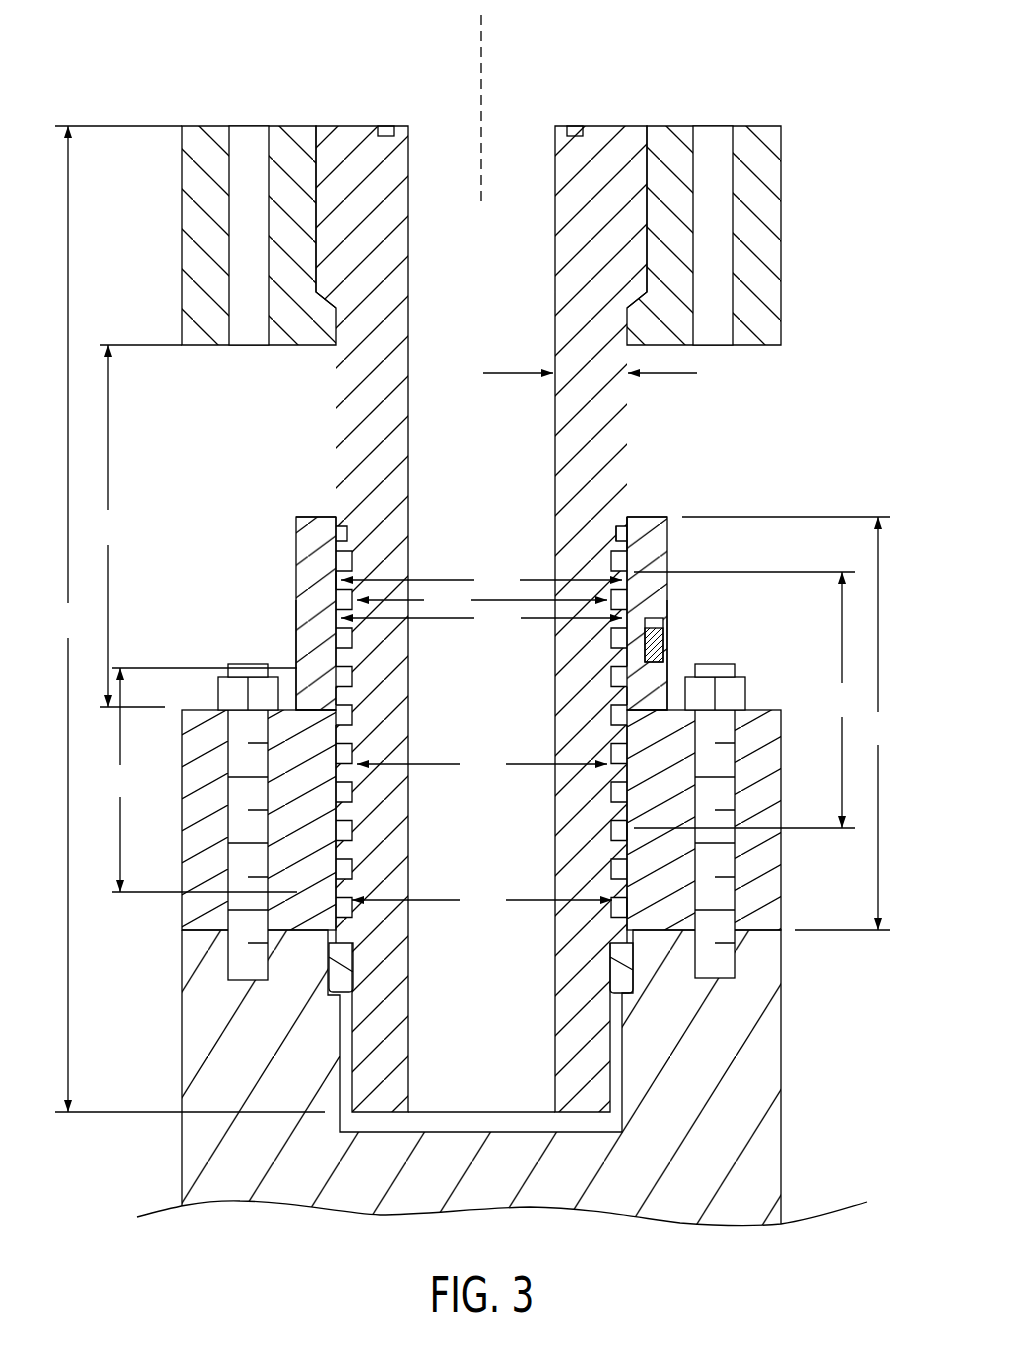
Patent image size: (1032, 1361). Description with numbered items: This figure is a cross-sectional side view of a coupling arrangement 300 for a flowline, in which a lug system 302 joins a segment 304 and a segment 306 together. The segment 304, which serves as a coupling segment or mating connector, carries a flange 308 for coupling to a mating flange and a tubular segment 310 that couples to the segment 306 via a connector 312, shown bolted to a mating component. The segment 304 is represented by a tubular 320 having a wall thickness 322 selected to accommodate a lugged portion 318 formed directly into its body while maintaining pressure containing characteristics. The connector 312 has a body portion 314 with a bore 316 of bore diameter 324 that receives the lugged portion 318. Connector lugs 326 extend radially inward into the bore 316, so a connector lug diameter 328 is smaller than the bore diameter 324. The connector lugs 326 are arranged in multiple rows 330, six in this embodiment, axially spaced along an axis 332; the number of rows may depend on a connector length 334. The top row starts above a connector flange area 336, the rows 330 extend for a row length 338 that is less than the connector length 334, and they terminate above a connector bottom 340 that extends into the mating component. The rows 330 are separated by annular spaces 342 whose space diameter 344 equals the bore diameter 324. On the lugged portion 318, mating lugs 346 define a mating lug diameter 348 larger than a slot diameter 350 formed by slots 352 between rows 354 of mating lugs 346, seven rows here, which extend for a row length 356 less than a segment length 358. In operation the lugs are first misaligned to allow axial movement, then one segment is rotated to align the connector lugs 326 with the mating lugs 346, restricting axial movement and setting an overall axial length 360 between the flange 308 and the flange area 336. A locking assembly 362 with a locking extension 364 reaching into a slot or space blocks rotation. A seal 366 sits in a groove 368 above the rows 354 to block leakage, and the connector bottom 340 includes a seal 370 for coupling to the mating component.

The coupling arrangement 300 is at (730, 55).
The lug system 302 is at (688, 510).
The segment 304 is at (350, 128).
The segment 306 is at (192, 840).
The flange 308 is at (757, 190).
The tubular segment 310 is at (355, 410).
The connector 312 is at (790, 712).
The body portion 314 is at (315, 617).
The bore 316 is at (641, 497).
The lugged portion 318 is at (337, 538).
The tubular 320 is at (625, 153).
The wall thickness 322 is at (512, 372).
The bore diameter 324 is at (481, 618).
The connector lugs 326 is at (619, 763).
The connector lug diameter 328 is at (482, 764).
The rows 330 is at (345, 762).
The axis 332 is at (481, 63).
The connector length 334 is at (789, 723).
The connector flange area 336 is at (222, 710).
The row length 338 is at (198, 780).
The connector bottom 340 is at (315, 948).
The spaces 342 is at (628, 897).
The space diameter 344 is at (482, 900).
The mating lugs 346 is at (620, 832).
The mating lug diameter 348 is at (481, 580).
The slot diameter 350 is at (482, 600).
The slots 352 is at (323, 578).
The rows 354 is at (300, 528).
The row length 356 is at (746, 700).
The segment length 358 is at (187, 619).
The overall axial length 360 is at (135, 526).
The locking assembly 362 is at (682, 603).
The locking extension 364 is at (663, 633).
The seal 366 is at (612, 526).
The groove 368 is at (642, 517).
The seal 370 is at (620, 990).